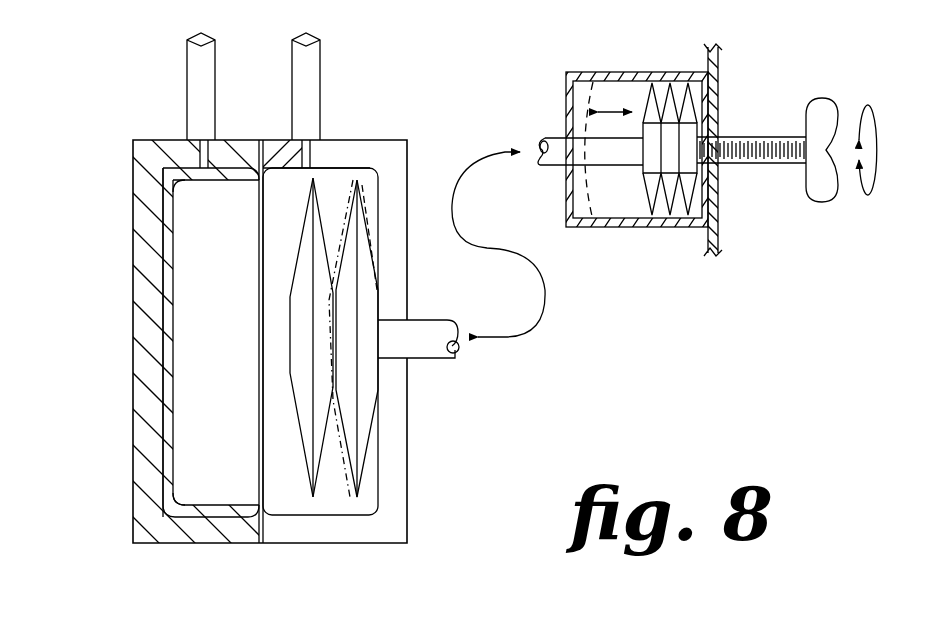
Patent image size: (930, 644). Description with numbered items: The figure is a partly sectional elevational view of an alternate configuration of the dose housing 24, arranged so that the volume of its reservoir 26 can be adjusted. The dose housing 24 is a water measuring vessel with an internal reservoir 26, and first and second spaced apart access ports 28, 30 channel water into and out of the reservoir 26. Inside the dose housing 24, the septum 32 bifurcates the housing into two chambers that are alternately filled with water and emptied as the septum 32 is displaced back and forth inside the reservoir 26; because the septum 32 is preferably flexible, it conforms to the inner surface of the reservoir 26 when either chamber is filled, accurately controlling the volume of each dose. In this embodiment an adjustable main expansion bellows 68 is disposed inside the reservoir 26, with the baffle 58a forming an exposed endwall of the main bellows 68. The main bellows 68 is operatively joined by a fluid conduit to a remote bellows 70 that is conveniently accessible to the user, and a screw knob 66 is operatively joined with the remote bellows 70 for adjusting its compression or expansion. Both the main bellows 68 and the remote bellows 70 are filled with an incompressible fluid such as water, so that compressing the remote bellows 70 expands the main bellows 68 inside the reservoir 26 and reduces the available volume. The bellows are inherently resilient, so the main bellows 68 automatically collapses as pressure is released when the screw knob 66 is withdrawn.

The dose housing 24 is at (133, 167).
The reservoir 26 is at (221, 383).
The first access port 28 is at (216, 92).
The second access port 30 is at (322, 108).
The septum 32 is at (172, 283).
The baffle 58a is at (297, 405).
The screw knob 66 is at (818, 202).
The main expansion bellows 68 is at (363, 398).
The remote bellows 70 is at (653, 205).